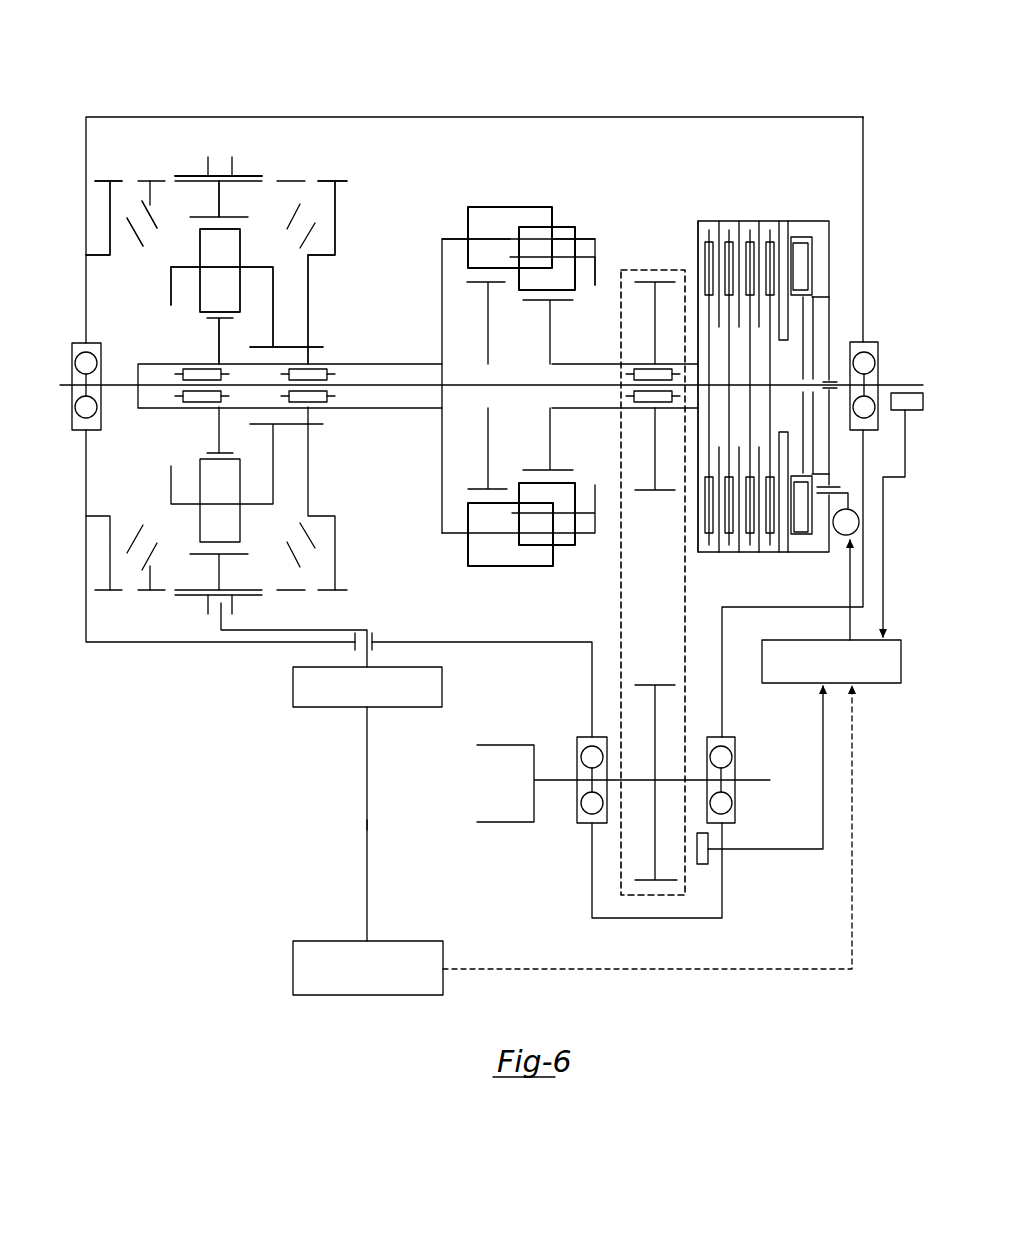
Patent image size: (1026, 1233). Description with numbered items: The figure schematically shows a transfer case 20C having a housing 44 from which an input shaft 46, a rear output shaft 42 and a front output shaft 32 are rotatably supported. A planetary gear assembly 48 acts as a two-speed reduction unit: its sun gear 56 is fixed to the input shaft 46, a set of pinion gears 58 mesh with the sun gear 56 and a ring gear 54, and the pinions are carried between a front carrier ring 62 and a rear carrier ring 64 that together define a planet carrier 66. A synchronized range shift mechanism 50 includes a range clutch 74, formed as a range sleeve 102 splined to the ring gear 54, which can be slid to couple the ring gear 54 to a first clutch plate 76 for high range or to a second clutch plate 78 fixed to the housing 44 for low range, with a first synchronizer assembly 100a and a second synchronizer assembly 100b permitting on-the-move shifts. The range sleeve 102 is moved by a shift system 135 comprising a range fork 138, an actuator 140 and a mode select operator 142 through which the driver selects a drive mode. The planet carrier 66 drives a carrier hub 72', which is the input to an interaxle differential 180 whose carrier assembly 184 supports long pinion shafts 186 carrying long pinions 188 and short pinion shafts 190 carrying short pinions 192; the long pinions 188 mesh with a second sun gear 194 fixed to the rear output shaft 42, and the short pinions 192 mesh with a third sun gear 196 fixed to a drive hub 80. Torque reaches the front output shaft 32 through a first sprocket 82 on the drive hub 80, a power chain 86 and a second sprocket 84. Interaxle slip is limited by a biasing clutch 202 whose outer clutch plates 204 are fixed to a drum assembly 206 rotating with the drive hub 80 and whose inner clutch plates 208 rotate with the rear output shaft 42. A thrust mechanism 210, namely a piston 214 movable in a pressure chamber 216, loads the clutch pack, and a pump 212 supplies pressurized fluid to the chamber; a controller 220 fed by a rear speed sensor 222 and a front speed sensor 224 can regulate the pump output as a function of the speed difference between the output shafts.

The transfer case 20C is at (730, 106).
The front output shaft 32 is at (560, 780).
The rear output shaft 42 is at (852, 342).
The housing 44 is at (863, 116).
The input shaft 46 is at (123, 387).
The planetary gear assembly 48 is at (166, 238).
The synchronized range shift mechanism 50 is at (138, 153).
The ring gear 54 is at (233, 186).
The sun gear 56 is at (218, 338).
The pinion gears 58 is at (220, 248).
The front carrier ring 62 is at (172, 307).
The rear carrier ring 64 is at (273, 290).
The planet carrier 66 is at (166, 274).
The carrier hub 72' is at (345, 309).
The range clutch 74 is at (250, 172).
The first clutch plate 76 is at (308, 283).
The second clutch plate 78 is at (110, 199).
The drive hub 80 is at (577, 408).
The first sprocket 82 is at (655, 307).
The second sprocket 84 is at (620, 703).
The power chain 86 is at (621, 565).
The first synchronizer assembly 100a is at (312, 178).
The second synchronizer assembly 100b is at (124, 164).
The range sleeve 102 is at (182, 172).
The shift system 135 is at (228, 829).
The range fork 138 is at (325, 632).
The actuator 140 is at (293, 686).
The mode select operator 142 is at (293, 970).
The interaxle differential 180 is at (541, 189).
The carrier assembly 184 is at (603, 228).
The long pinion shafts 186 is at (475, 240).
The long pinions 188 is at (492, 215).
The short pinion shafts 190 is at (587, 258).
The short pinions 192 is at (568, 233).
The second sun gear 194 is at (488, 335).
The third sun gear 196 is at (550, 330).
The biasing clutch 202 is at (749, 212).
The outer clutch plates 204 is at (718, 232).
The drum assembly 206 is at (698, 235).
The inner clutch plates 208 is at (776, 356).
The thrust mechanism 210 is at (819, 256).
The pump 212 is at (836, 544).
The piston 214 is at (813, 297).
The pressure chamber 216 is at (817, 233).
The controller 220 is at (892, 683).
The rear speed sensor 222 is at (915, 393).
The front speed sensor 224 is at (707, 853).